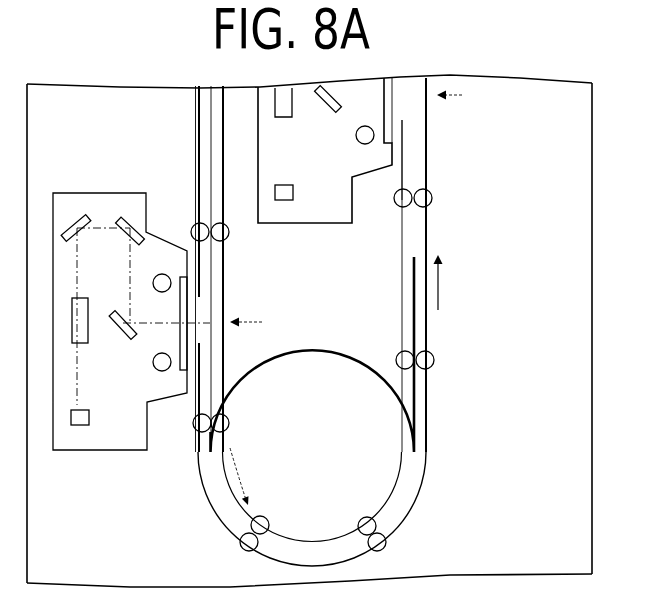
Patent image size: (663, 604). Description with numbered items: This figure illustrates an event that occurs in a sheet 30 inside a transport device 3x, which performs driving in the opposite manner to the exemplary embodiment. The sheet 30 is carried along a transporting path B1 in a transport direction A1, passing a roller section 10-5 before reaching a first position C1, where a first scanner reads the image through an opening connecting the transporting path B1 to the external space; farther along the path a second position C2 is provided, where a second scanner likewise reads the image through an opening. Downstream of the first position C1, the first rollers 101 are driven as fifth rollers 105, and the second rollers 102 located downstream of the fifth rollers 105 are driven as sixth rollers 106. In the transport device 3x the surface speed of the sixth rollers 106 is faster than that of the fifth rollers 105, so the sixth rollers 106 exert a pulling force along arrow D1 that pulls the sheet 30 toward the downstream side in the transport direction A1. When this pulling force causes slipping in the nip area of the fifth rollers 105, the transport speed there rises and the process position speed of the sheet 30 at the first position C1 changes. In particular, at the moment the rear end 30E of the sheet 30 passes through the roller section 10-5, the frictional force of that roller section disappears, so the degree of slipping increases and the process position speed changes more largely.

The transport device 3x is at (76, 121).
The sheet 30 is at (412, 295).
The rear end of sheet 30E is at (205, 219).
The roller section 10-5 is at (238, 238).
The first position C1 is at (259, 324).
The second position C2 is at (466, 98).
The transporting path B1 is at (412, 158).
The transport direction A1 is at (457, 284).
The fifth rollers 105 is at (260, 393).
The first rollers 101 is at (207, 417).
The sixth rollers 106 is at (313, 493).
The second rollers 102 is at (256, 540).
The pulling force direction D1 is at (251, 476).